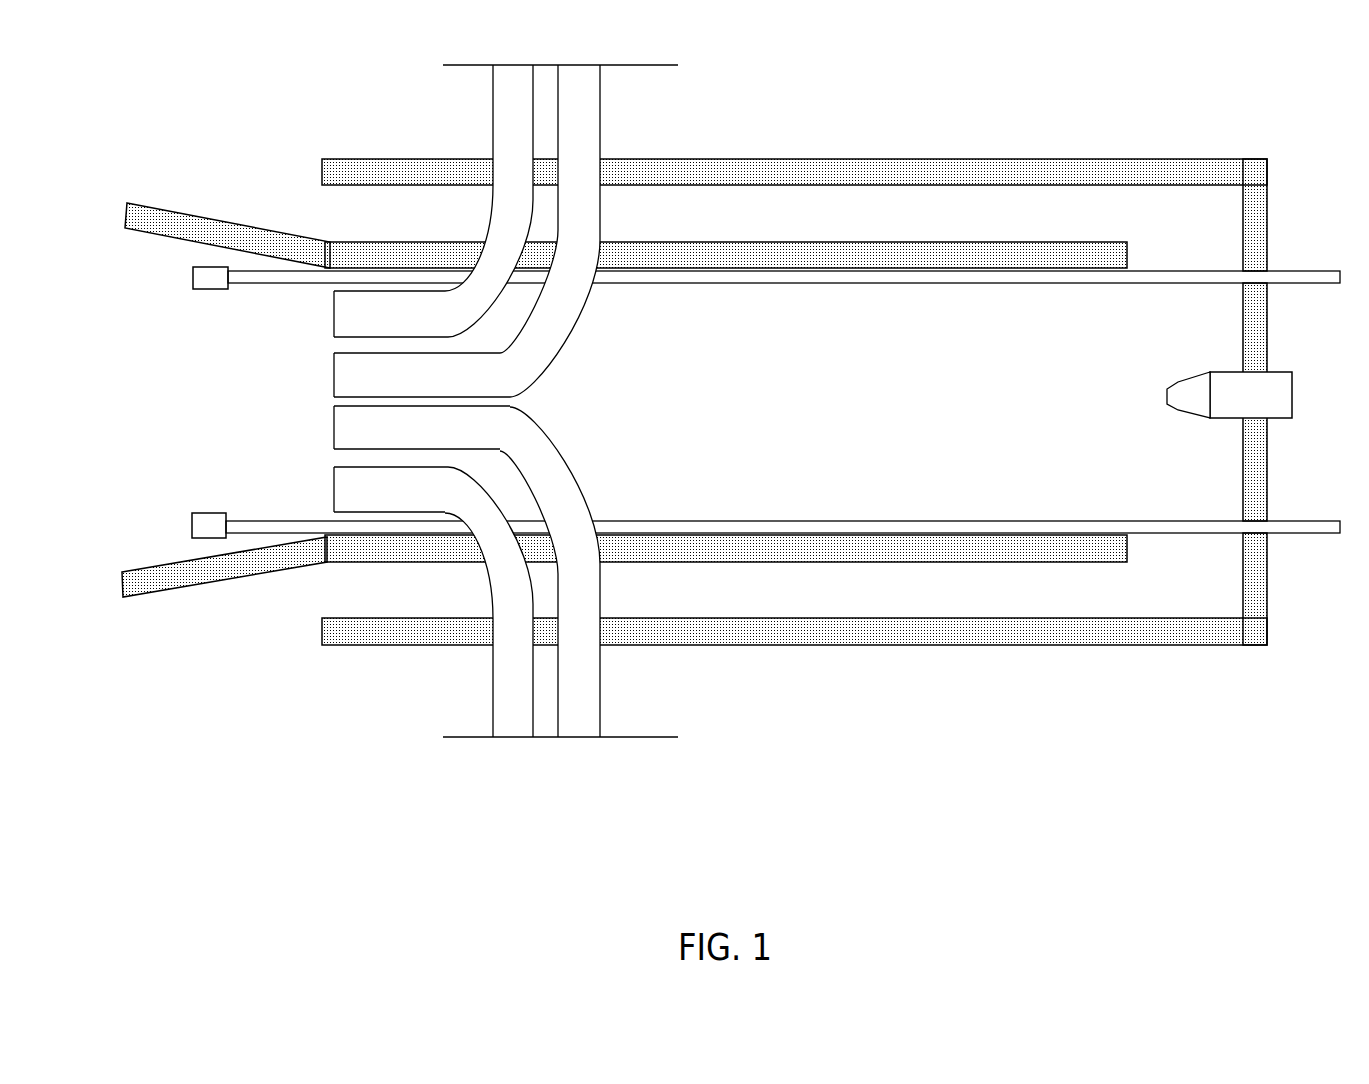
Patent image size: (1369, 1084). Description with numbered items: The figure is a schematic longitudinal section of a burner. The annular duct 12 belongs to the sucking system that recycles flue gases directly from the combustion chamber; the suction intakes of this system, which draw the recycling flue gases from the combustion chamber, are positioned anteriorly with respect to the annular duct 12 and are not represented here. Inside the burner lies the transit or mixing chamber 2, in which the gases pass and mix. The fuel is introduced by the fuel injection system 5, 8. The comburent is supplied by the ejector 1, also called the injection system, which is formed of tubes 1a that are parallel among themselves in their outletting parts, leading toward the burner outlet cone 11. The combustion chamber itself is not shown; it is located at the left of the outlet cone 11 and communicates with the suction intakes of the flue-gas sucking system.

The ejector 1 is at (566, 396).
The tubes 1a is at (370, 325).
The transit or mixing chamber 2 is at (890, 408).
The fuel injection system 5 is at (1185, 397).
The fuel injection system 8 is at (207, 527).
The burner outlet cone 11 is at (146, 218).
The annular duct 12 is at (735, 585).